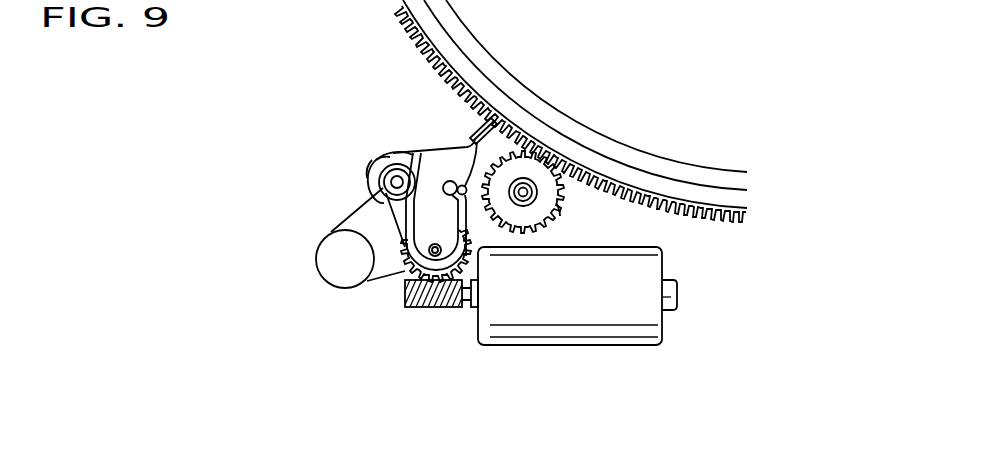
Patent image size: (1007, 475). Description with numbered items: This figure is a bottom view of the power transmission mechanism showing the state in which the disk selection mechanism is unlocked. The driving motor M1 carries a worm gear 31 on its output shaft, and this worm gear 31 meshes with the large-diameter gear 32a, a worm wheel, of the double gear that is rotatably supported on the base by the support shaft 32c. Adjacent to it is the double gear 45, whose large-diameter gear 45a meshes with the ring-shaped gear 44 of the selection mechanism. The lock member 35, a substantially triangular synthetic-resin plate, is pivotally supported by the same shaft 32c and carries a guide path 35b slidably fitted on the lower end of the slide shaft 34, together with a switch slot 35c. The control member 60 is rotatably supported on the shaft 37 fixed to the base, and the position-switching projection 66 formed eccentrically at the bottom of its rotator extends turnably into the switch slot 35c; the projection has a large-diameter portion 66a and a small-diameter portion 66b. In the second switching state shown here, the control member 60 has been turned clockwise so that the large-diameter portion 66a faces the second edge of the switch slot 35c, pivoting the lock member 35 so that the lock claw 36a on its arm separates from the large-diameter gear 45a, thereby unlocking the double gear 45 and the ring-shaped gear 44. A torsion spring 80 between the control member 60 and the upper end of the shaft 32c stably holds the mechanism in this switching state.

The ring-shaped gear 44 is at (621, 157).
The lock claw 36a is at (503, 137).
The slide shaft 34 is at (462, 186).
The lock member 35 is at (376, 212).
The switch slot 35c is at (370, 174).
The control member 60 is at (389, 157).
The shaft 37 is at (378, 163).
The position-switching projection 66 is at (384, 185).
The large-diameter portion 66a is at (386, 194).
The small-diameter portion 66b is at (393, 160).
The torsion spring 80 is at (330, 284).
The large-diameter gear 32a is at (388, 272).
The support shaft 32c is at (437, 257).
The worm gear 31 is at (418, 304).
The driving motor M1 is at (573, 336).
The double gear 45 is at (549, 236).
The large-diameter gear 45a is at (560, 214).
The guide path 35b is at (462, 258).